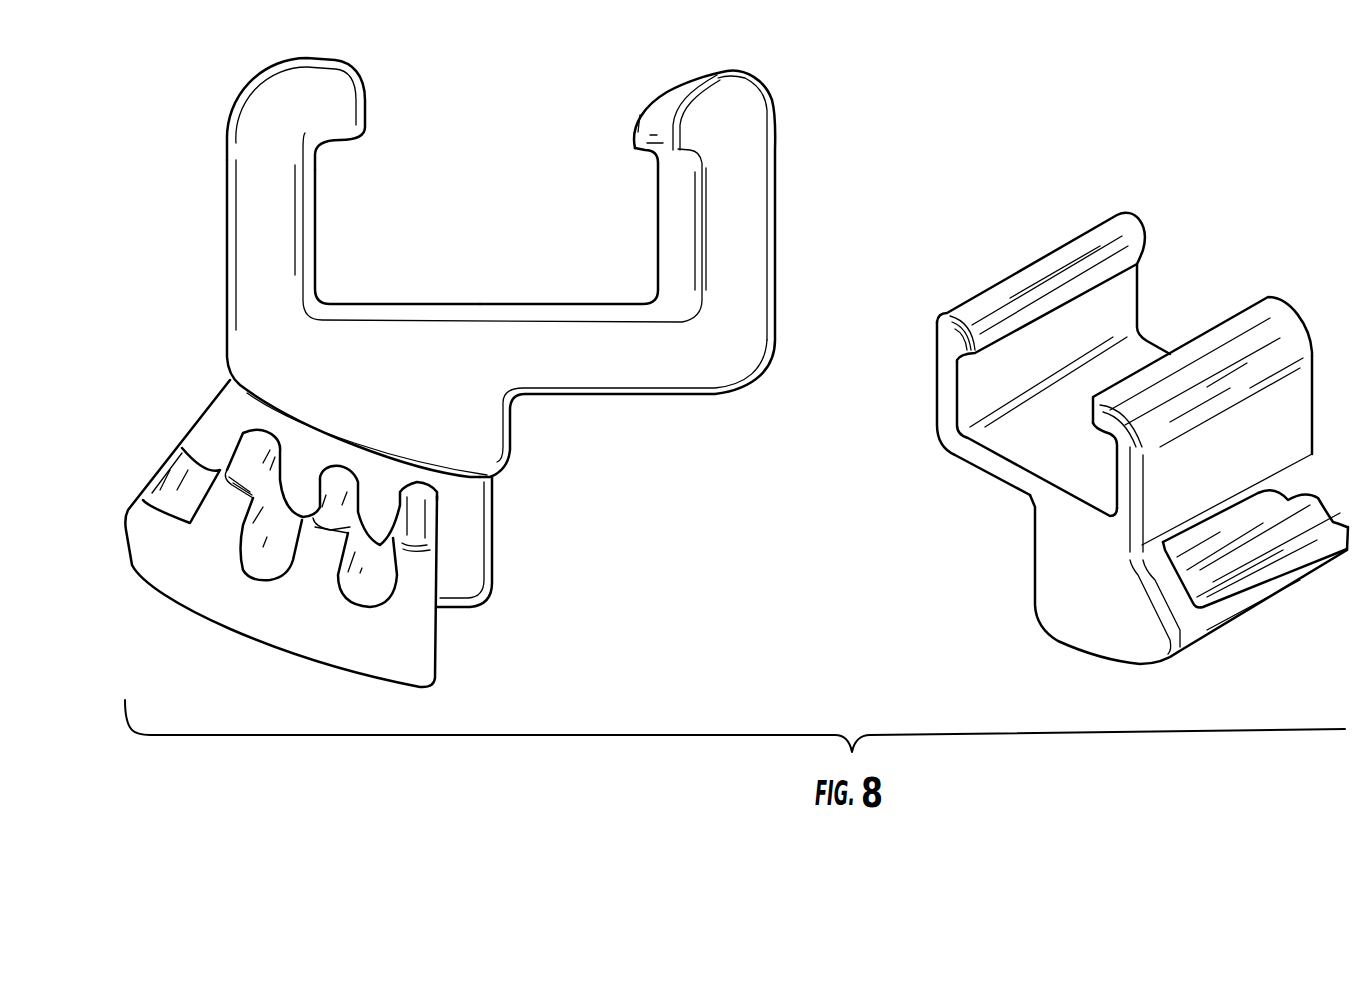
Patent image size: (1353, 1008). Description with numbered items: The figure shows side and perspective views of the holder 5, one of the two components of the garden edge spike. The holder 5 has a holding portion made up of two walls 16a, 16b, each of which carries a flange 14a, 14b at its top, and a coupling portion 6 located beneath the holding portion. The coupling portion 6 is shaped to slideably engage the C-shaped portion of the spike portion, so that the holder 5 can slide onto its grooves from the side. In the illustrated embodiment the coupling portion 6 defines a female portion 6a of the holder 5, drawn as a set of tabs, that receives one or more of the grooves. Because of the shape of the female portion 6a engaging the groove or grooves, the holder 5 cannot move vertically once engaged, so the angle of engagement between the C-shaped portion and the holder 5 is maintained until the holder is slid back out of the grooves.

The holder 5 is at (808, 147).
The coupling portion 6 is at (556, 503).
The female portion 6a is at (217, 445).
The flange 14a is at (640, 127).
The flange 14b is at (363, 97).
The wall 16a is at (660, 237).
The wall 16b is at (312, 256).